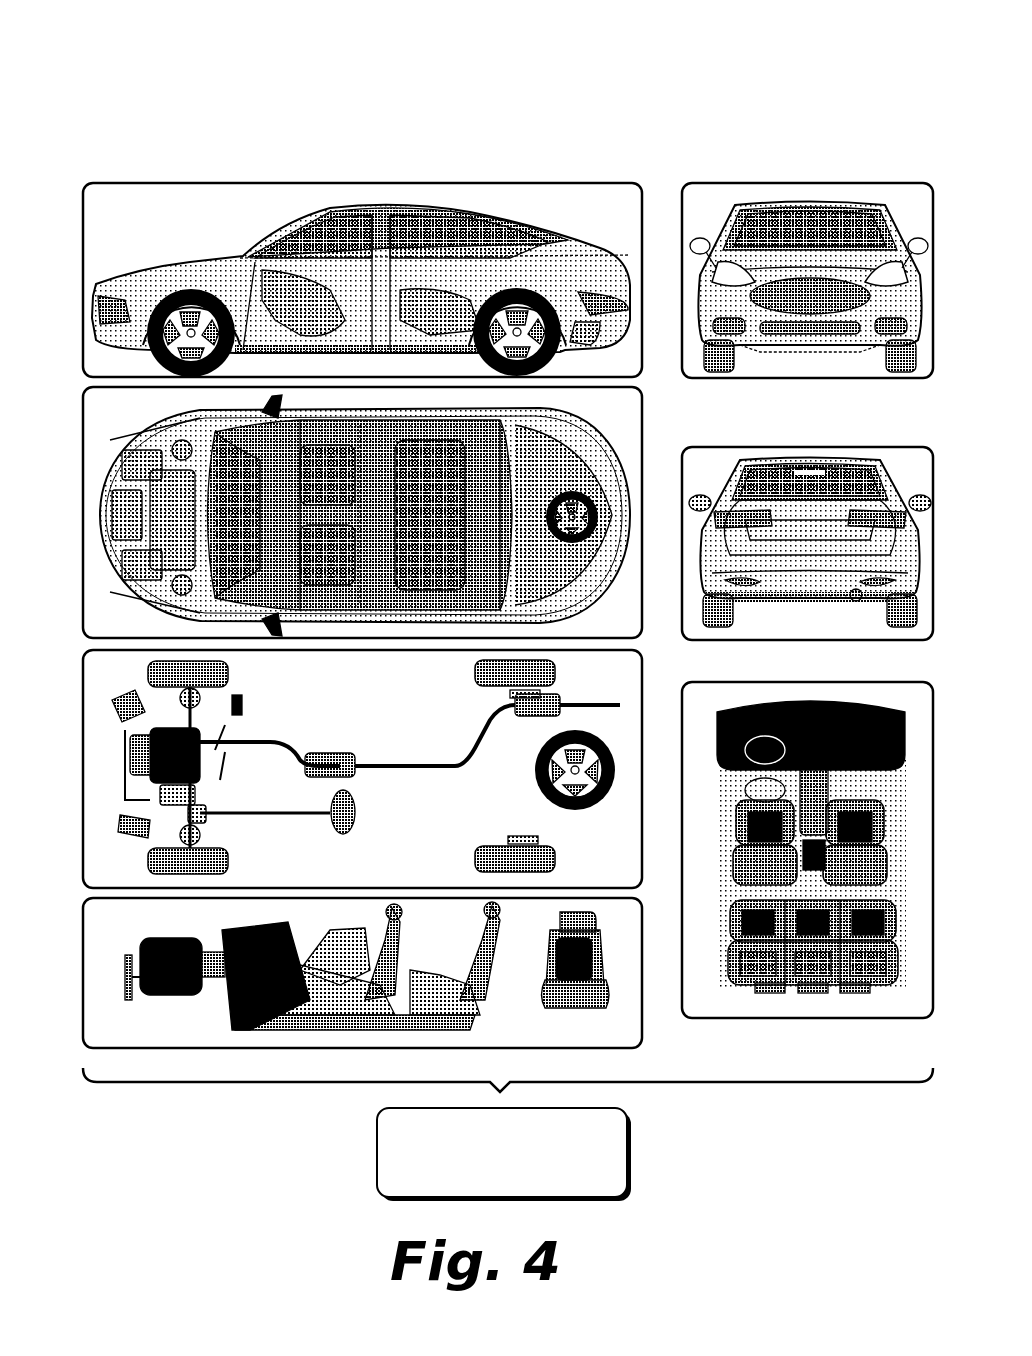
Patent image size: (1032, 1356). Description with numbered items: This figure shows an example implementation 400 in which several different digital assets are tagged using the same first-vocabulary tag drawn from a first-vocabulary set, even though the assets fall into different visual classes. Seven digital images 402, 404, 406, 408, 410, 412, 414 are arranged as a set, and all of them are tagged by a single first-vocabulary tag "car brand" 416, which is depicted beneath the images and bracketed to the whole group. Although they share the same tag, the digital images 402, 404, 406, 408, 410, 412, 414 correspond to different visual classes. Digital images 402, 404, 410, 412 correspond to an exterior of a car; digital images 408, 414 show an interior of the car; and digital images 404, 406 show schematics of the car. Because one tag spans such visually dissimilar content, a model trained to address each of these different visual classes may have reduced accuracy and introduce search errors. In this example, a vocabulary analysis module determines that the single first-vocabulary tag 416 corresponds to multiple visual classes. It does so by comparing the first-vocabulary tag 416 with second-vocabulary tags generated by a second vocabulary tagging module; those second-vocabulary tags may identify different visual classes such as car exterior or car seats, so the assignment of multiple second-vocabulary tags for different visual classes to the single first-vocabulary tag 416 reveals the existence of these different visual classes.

The example implementation 400 is at (190, 66).
The digital image 402 is at (92, 212).
The digital image 404 is at (92, 418).
The digital image 406 is at (92, 684).
The digital image 408 is at (92, 924).
The digital image 410 is at (807, 182).
The digital image 412 is at (807, 446).
The digital image 414 is at (807, 681).
The first-vocabulary tag 416 is at (504, 1154).